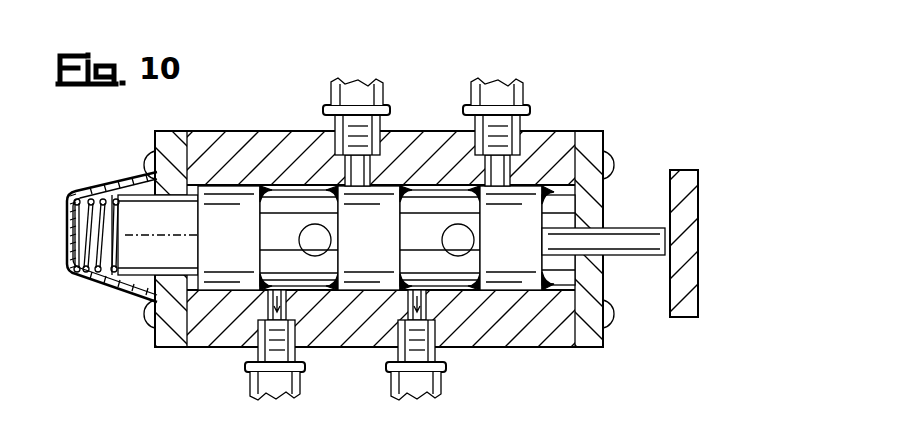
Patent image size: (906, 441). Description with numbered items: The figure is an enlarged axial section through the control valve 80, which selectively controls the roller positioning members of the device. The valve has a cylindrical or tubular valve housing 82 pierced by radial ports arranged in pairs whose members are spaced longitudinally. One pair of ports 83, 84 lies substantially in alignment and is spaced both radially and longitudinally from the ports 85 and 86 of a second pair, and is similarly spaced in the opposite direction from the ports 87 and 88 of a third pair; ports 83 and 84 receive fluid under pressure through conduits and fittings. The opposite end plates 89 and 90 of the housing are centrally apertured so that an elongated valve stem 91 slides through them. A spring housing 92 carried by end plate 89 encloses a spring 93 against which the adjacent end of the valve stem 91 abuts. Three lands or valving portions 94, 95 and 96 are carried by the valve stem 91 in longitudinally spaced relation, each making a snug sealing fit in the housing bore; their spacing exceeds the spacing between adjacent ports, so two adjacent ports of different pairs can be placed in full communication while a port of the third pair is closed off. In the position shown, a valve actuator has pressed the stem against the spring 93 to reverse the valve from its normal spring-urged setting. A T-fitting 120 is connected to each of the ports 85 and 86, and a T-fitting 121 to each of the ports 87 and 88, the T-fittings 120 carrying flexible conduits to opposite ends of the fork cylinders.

The control valve 80 is at (560, 128).
The valve housing 82 is at (243, 140).
The port 83 is at (320, 262).
The port 84 is at (462, 262).
The port 85 is at (240, 320).
The port 86 is at (428, 316).
The port 87 is at (334, 168).
The port 88 is at (480, 172).
The end plate 89 is at (173, 320).
The end plate 90 is at (595, 342).
The valve stem 91 is at (623, 240).
The spring housing 92 is at (118, 176).
The spring 93 is at (86, 232).
The land 94 is at (217, 205).
The land 95 is at (372, 275).
The land 96 is at (525, 280).
The T-fitting 120 is at (275, 378).
The T-fitting 121 is at (344, 96).